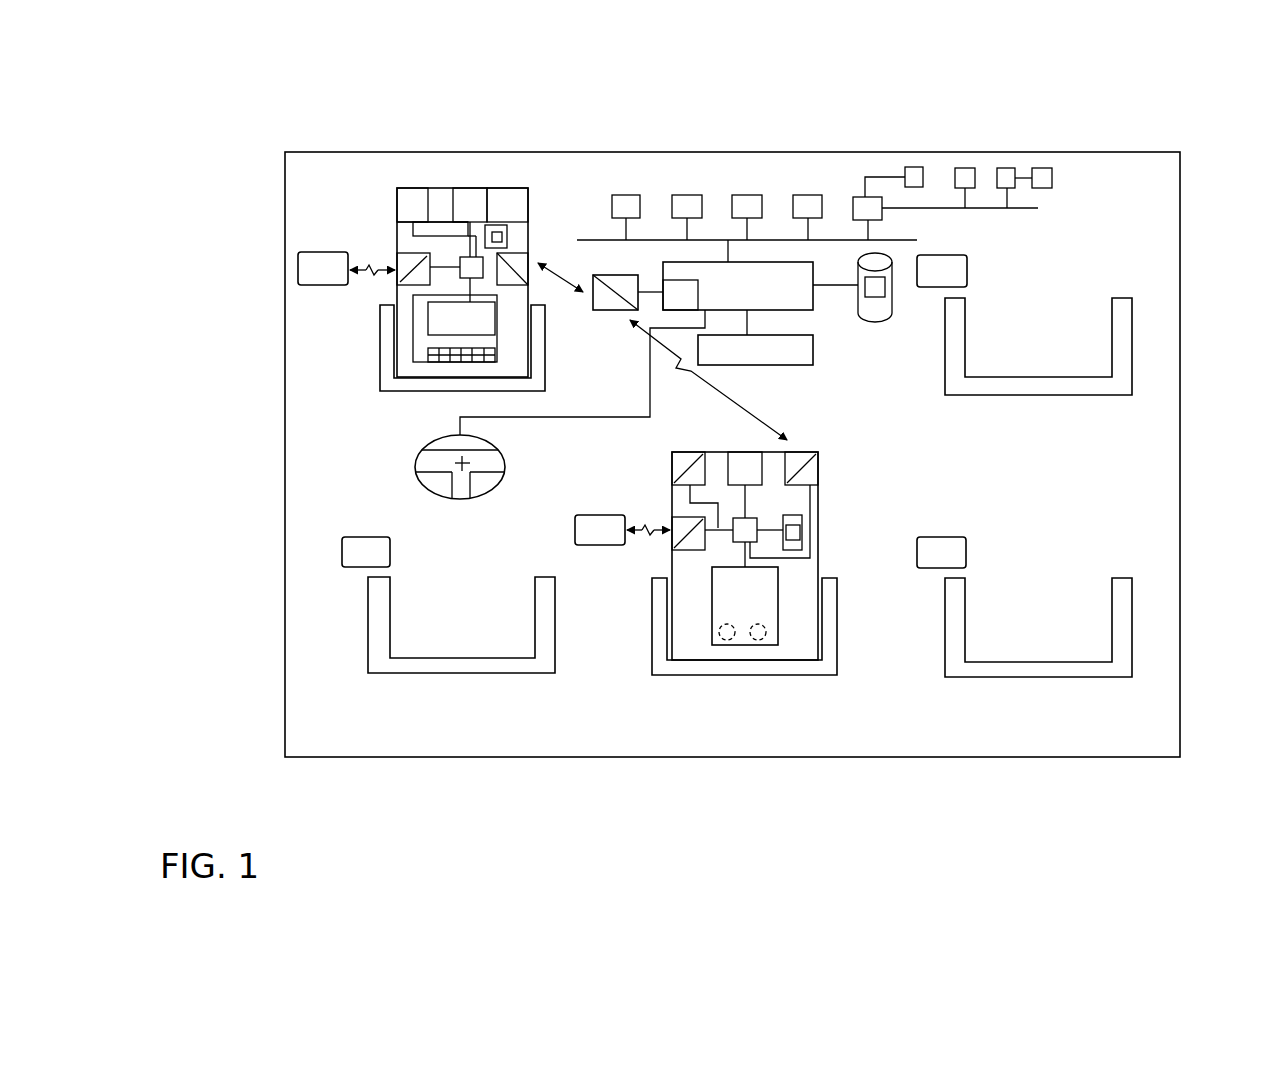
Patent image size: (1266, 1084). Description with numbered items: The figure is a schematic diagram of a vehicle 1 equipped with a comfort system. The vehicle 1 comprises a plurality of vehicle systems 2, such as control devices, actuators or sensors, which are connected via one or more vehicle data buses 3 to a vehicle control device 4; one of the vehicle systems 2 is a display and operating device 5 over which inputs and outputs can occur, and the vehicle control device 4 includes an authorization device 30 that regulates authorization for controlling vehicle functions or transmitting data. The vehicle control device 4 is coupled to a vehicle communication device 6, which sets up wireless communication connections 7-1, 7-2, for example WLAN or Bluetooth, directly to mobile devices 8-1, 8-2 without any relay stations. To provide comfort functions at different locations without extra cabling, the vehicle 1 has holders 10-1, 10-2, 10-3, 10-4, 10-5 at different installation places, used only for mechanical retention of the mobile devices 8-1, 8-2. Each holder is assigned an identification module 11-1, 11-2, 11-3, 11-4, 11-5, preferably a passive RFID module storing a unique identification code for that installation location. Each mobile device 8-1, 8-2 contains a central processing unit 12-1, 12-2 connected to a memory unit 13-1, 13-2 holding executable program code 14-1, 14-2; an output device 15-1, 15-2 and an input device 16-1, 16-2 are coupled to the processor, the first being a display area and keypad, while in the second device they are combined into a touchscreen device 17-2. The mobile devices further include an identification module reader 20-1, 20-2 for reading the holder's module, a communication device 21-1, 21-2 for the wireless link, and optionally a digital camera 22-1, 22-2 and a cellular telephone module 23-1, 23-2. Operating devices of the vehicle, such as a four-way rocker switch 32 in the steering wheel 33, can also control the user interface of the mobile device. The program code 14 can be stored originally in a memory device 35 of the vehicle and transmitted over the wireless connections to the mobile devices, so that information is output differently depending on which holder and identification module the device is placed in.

The vehicle 1 is at (1180, 205).
The vehicle systems 2 is at (600, 290).
The vehicle data bus 3 is at (840, 240).
The vehicle control device 4 is at (810, 310).
The display and operating device 5 is at (760, 365).
The vehicle communication device 6 is at (613, 273).
The wireless communication connection 7-1 is at (557, 272).
The wireless communication connection 7-2 is at (760, 423).
The mobile device 8-1 is at (467, 197).
The mobile device 8-2 is at (677, 503).
The holder 10-1 is at (383, 385).
The holder 10-2 is at (1095, 385).
The holder 10-3 is at (462, 667).
The holder 10-4 is at (807, 668).
The holder 10-5 is at (1047, 668).
The identification module 11-1 is at (302, 283).
The identification module 11-2 is at (963, 258).
The identification module 11-3 is at (342, 563).
The identification module 11-4 is at (575, 517).
The identification module 11-5 is at (963, 538).
The central processing unit 12-1 is at (475, 272).
The central processing unit 12-2 is at (753, 522).
The memory unit 13-1 is at (488, 245).
The memory unit 13-2 is at (797, 520).
The program code 14 is at (875, 295).
The program code 14-1 is at (492, 230).
The program code 14-2 is at (797, 533).
The output device 15-1 is at (437, 320).
The output device 15-2 is at (760, 602).
The input device 16-1 is at (432, 358).
The input device 16-2 is at (758, 638).
The touchscreen device 17-2 is at (778, 585).
The identification module reader 20-1 is at (400, 277).
The identification module reader 20-2 is at (683, 545).
The communication device 21-1 is at (519, 257).
The communication device 21-2 is at (812, 470).
The digital camera 22-1 is at (427, 220).
The digital camera 22-2 is at (740, 465).
The cellular telephone module 23-1 is at (413, 197).
The cellular telephone module 23-2 is at (677, 472).
The authorization device 30 is at (680, 295).
The four-way rocker switch 32 is at (453, 465).
The steering wheel 33 is at (432, 490).
The memory device 35 is at (862, 315).